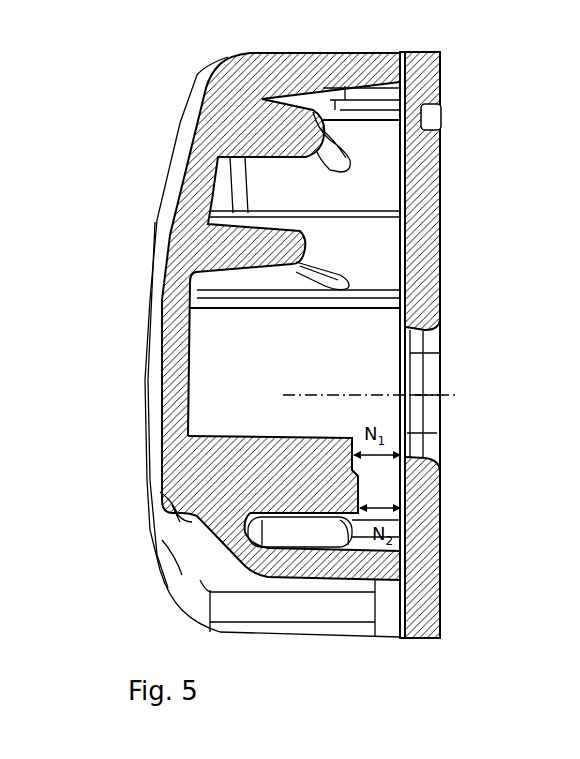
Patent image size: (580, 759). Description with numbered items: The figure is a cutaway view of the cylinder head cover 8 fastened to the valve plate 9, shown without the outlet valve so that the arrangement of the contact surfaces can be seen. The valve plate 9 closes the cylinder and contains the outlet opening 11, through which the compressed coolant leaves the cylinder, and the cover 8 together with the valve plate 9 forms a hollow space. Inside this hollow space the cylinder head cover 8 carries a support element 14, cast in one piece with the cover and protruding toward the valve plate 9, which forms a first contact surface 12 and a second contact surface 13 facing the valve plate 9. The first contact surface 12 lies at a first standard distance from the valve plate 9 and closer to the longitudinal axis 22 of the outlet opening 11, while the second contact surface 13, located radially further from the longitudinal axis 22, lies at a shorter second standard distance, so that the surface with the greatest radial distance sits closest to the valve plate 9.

The cylinder head cover 8 is at (178, 227).
The valve plate 9 is at (430, 262).
The outlet opening 11 is at (427, 415).
The first contact surface 12 is at (407, 477).
The second contact surface 13 is at (407, 505).
The support element 14 is at (273, 483).
The longitudinal axis 22 is at (457, 395).